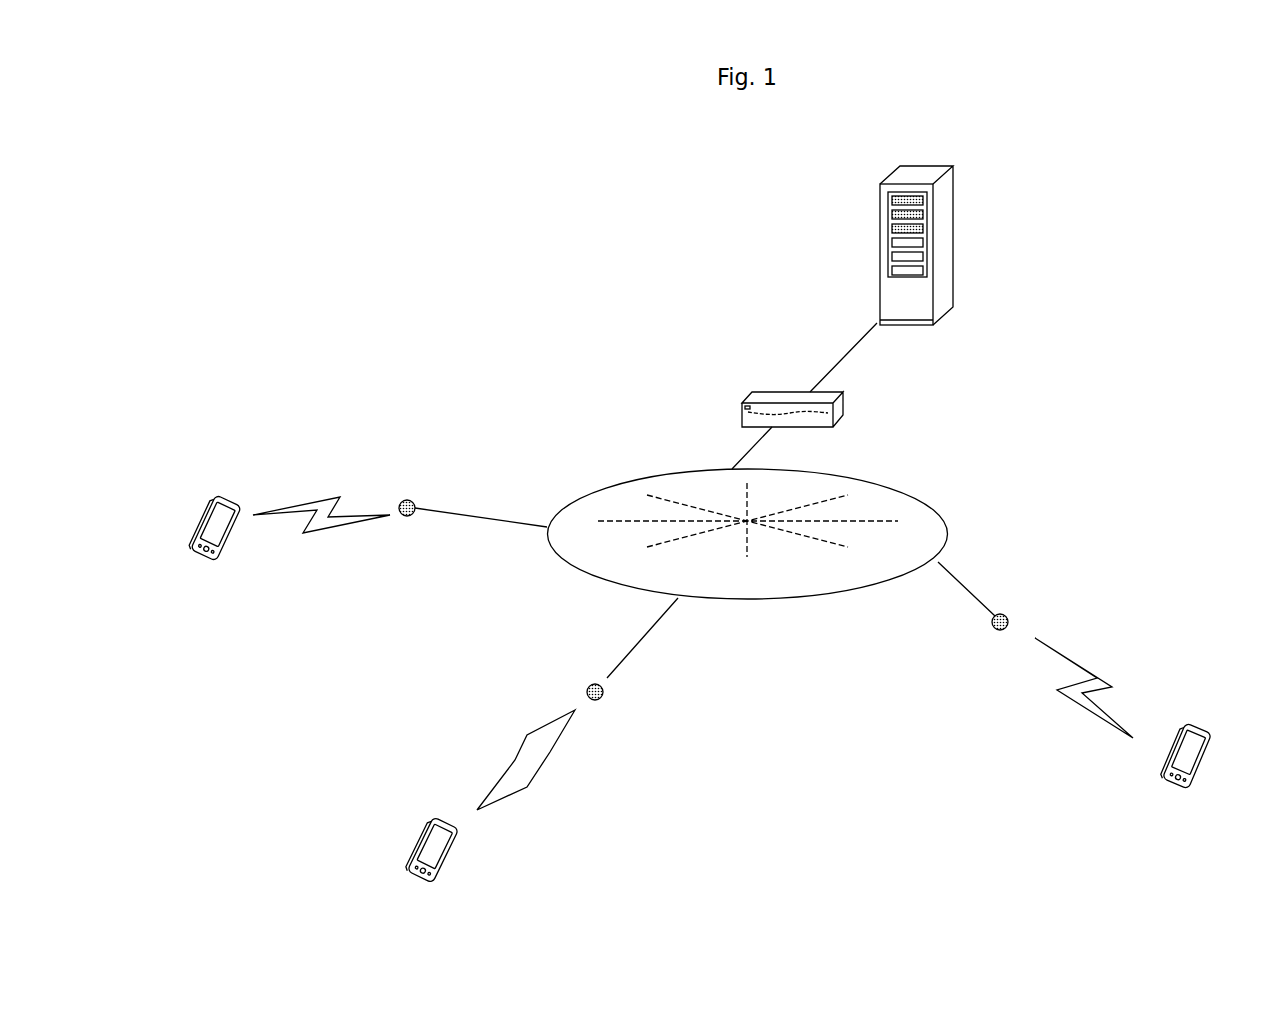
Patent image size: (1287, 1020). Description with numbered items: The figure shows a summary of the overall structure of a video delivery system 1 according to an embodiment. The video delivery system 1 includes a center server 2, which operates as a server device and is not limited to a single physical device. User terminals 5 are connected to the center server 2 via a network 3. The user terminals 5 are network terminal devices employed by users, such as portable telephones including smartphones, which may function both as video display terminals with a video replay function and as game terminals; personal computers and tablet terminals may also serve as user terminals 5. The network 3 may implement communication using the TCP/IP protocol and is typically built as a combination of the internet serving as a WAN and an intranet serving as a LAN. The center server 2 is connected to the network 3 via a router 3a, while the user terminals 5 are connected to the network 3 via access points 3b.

The video delivery system 1 is at (278, 285).
The center server 2 is at (953, 228).
The network 3 is at (609, 413).
The router 3a is at (760, 388).
The access point 3b is at (415, 500).
The user terminal 5 is at (247, 500).